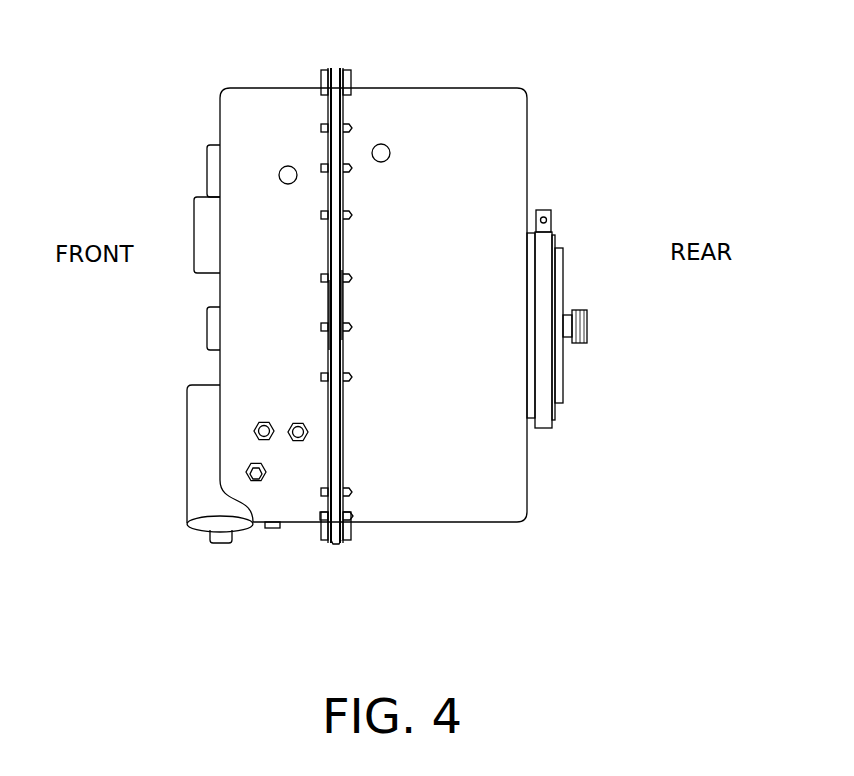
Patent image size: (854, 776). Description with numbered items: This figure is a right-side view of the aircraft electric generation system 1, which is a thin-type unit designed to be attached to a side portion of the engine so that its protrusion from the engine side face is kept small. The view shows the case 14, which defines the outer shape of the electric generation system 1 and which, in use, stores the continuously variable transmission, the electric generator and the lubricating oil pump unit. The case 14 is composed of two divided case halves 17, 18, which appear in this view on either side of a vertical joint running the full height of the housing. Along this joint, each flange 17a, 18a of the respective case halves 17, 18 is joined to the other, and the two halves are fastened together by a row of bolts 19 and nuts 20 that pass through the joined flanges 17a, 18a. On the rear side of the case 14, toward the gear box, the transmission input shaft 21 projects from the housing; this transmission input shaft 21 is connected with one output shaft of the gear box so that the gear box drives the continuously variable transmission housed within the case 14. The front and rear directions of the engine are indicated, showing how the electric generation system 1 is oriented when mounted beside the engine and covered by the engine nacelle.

The electric generation system 1 is at (542, 93).
The case 14 is at (405, 614).
The case half 17 is at (388, 505).
The flange 17a is at (342, 302).
The case half 18 is at (300, 505).
The flange 18a is at (329, 316).
The bolt 19 is at (321, 80).
The nut 20 is at (351, 80).
The transmission input shaft 21 is at (588, 327).